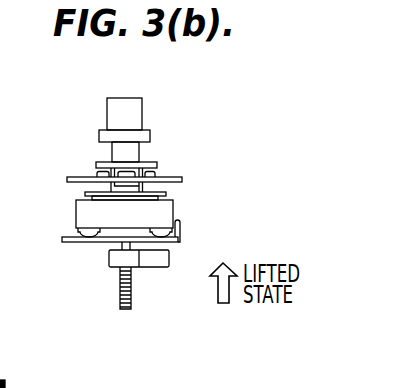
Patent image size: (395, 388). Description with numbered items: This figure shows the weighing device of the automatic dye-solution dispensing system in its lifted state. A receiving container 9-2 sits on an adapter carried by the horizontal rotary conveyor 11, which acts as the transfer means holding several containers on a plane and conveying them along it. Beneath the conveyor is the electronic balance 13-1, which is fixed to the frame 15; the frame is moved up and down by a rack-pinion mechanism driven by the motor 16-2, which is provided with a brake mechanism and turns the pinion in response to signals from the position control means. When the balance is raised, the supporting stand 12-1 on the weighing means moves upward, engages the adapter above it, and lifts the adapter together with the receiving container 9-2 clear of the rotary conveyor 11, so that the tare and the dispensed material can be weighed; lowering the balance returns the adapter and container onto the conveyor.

The receiving container 9-2 is at (132, 110).
The rotary conveyor 11 is at (172, 176).
The supporting stand 12-1 is at (161, 190).
The electronic balance 13-1 is at (167, 215).
The frame 15 is at (175, 241).
The motor 16-2 is at (148, 267).